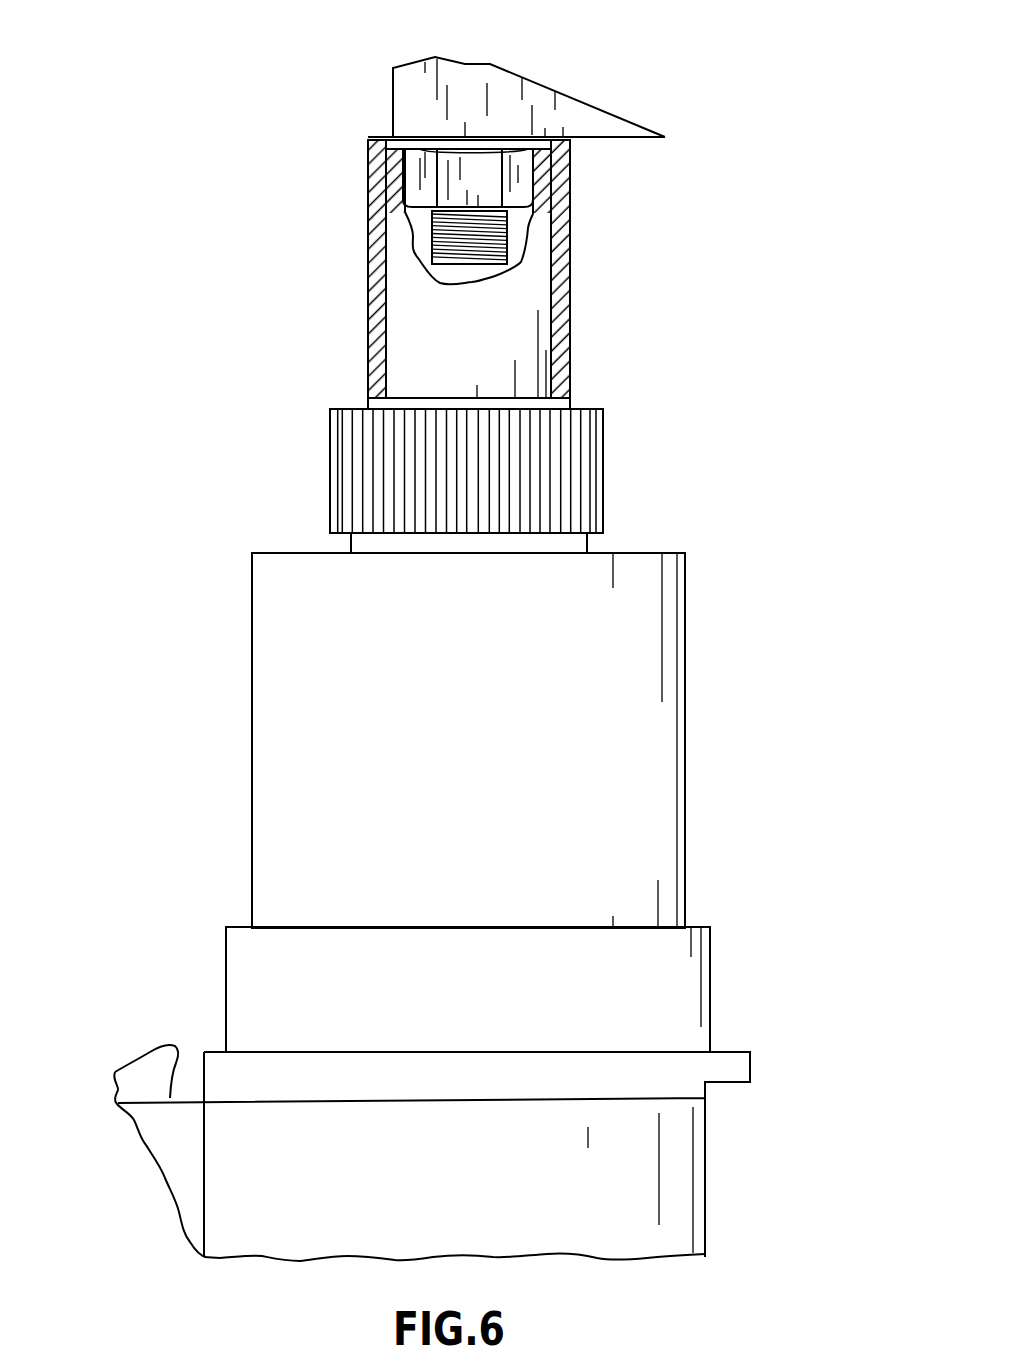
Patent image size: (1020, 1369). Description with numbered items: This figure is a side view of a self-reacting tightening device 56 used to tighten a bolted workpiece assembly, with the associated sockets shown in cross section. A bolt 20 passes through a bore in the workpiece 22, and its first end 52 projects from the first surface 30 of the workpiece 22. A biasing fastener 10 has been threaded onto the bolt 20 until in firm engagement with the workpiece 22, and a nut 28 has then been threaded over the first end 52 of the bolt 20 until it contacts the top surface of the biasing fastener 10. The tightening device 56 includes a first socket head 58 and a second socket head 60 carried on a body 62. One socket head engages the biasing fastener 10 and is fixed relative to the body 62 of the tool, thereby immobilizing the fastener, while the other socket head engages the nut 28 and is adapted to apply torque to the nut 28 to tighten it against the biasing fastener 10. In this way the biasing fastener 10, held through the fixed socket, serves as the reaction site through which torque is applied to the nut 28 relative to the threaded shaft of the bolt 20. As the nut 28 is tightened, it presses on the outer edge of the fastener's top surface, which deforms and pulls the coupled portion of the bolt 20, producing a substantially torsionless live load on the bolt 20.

The biasing fastener 10 is at (397, 134).
The bolt 20 is at (497, 235).
The workpiece 22 is at (497, 70).
The nut 28 is at (450, 188).
The first surface 30 is at (617, 138).
The first end 52 is at (487, 264).
The self-reacting tightening device 56 is at (160, 717).
The first socket head 58 is at (368, 333).
The second socket head 60 is at (393, 218).
The body 62 is at (252, 603).